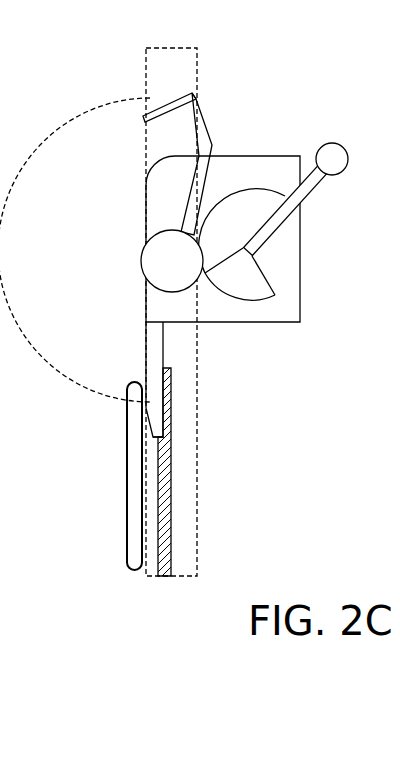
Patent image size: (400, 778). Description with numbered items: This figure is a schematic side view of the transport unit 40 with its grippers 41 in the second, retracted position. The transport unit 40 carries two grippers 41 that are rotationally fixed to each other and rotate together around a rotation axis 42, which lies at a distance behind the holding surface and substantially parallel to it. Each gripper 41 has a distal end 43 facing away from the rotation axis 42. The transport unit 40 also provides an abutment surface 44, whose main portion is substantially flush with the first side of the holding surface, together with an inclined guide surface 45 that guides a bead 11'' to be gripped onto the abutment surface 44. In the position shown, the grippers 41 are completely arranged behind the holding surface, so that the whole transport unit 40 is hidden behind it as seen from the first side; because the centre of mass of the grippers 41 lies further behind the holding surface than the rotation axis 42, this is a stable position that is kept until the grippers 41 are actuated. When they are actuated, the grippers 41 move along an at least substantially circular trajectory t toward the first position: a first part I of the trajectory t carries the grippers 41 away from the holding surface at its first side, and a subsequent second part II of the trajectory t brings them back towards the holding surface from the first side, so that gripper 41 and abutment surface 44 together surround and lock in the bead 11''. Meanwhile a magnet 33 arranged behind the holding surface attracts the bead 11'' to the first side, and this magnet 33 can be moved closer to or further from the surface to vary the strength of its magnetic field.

The circular trajectory t is at (50, 137).
The first part of the trajectory I is at (79, 124).
The second part of the trajectory II is at (67, 409).
The transport unit 40 is at (288, 296).
The gripper 41 is at (200, 135).
The rotation axis 42 is at (142, 272).
The distal end 43 is at (142, 117).
The abutment surface 44 is at (146, 343).
The guide surface 45 is at (148, 412).
The magnet 33 is at (165, 574).
The bead 11'' is at (99, 476).